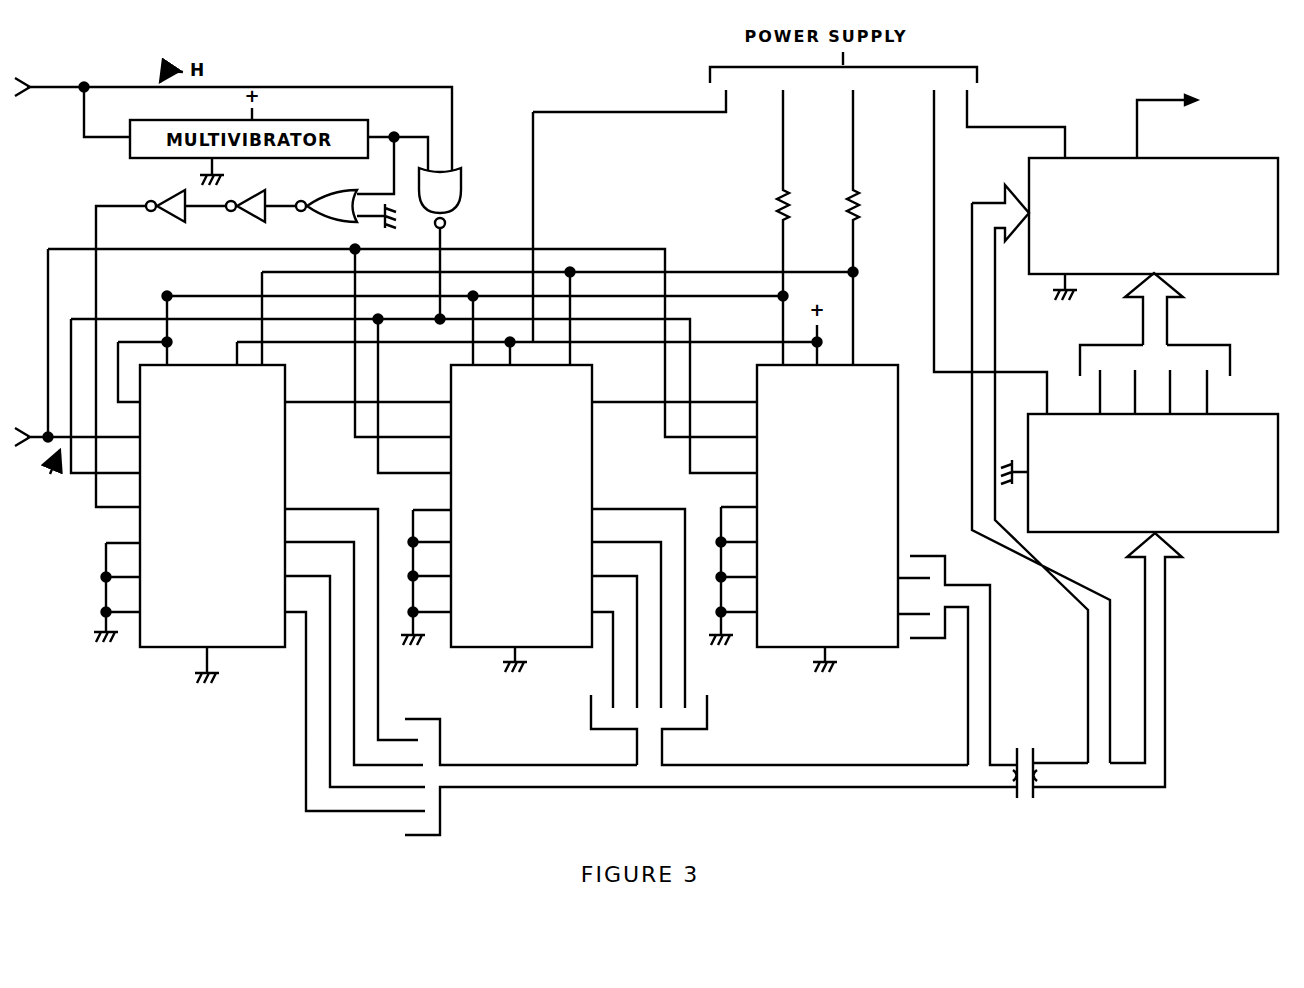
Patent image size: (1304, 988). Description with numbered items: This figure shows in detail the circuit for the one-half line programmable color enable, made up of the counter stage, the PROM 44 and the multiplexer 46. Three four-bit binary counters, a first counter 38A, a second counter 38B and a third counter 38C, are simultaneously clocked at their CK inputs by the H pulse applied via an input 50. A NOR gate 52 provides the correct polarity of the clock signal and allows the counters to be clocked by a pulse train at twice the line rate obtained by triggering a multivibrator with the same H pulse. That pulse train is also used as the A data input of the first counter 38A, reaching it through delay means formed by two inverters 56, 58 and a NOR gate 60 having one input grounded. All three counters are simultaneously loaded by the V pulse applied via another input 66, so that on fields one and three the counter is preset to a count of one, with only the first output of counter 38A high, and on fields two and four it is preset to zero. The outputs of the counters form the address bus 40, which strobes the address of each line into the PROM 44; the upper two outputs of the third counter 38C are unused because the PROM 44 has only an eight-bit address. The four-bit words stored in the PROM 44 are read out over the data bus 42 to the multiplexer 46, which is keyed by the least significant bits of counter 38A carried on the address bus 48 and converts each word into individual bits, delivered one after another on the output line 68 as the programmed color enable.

The input 50 is at (44, 87).
The NOR gate 52 is at (452, 208).
The inverter 56 is at (164, 226).
The inverter 58 is at (261, 226).
The NOR gate 60 is at (343, 226).
The input 66 is at (38, 440).
The first counter 38A is at (287, 471).
The second counter 38B is at (594, 471).
The third counter 38C is at (900, 471).
The N-bit address bus 40 is at (1167, 592).
The data bus 42 is at (1169, 320).
The PROM 44 is at (1238, 414).
The multiplexer 46 is at (1220, 158).
The M-bit address bus 48 is at (995, 357).
The output line 68 is at (1150, 98).